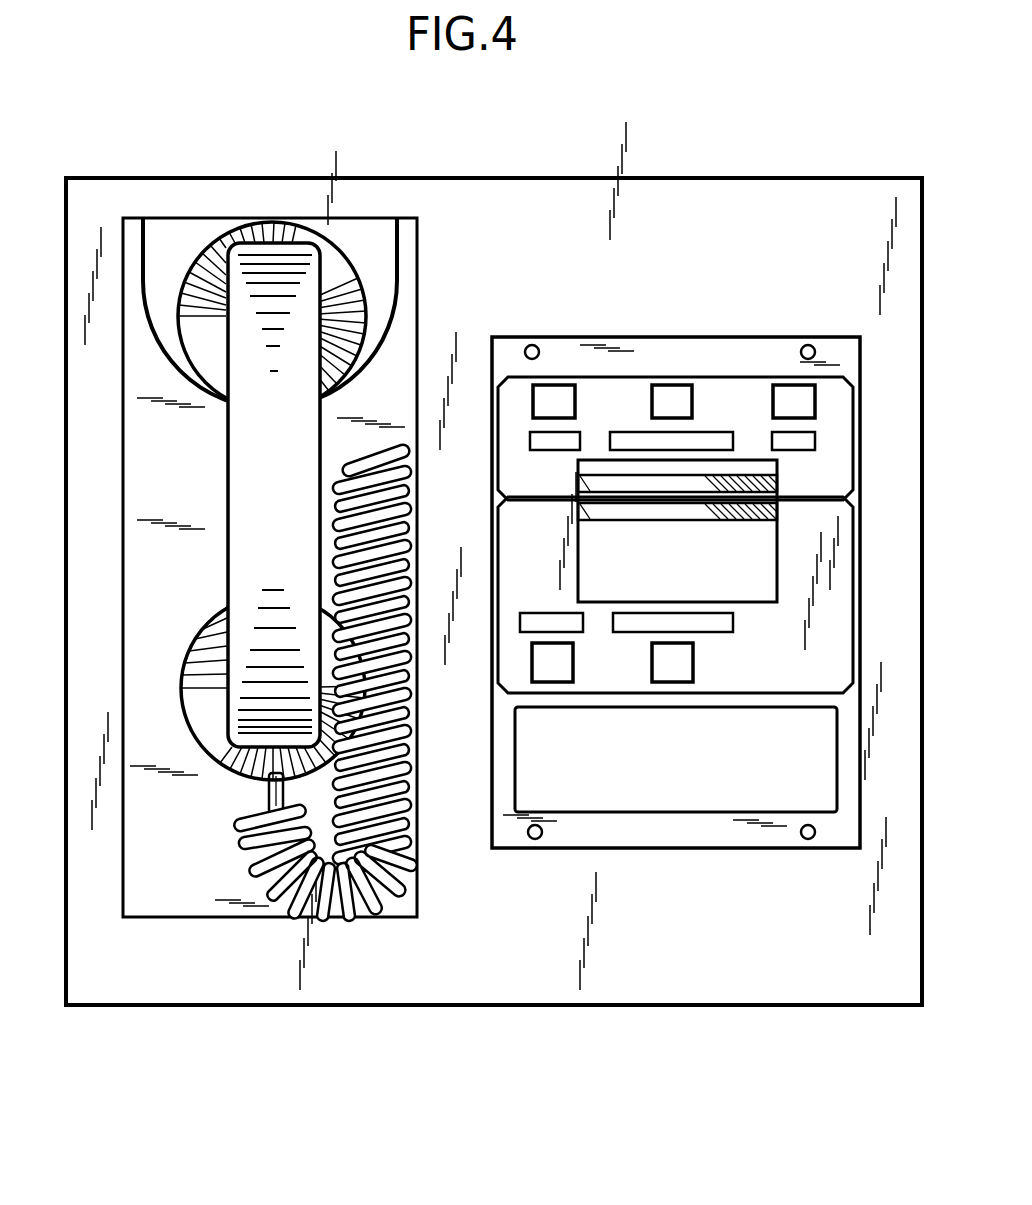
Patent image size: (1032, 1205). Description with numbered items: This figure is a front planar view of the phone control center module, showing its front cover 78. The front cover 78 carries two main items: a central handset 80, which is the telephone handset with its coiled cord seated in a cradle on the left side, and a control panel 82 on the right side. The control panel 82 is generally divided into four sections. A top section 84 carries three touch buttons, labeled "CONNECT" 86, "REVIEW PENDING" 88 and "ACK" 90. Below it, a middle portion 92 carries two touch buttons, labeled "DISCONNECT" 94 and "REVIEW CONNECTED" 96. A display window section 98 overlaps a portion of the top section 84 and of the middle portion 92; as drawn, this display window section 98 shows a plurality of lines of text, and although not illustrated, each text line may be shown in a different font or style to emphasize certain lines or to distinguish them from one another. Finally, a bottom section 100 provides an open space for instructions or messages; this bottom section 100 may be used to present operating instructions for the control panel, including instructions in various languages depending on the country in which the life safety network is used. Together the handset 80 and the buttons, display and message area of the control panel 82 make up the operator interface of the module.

The front cover 78 is at (694, 161).
The central handset 80 is at (254, 506).
The control panel 82 is at (757, 337).
The top section 84 is at (825, 463).
The touch button labeled "CONNECT" 86 is at (560, 402).
The touch button labeled "REVIEW PENDING" 88 is at (672, 392).
The touch button labeled "ACK" 90 is at (783, 401).
The middle portion 92 is at (836, 597).
The touch button labeled "DISCONNECT" 94 is at (558, 668).
The touch button labeled "REVIEW CONNECTED" 96 is at (680, 668).
The display window section 98 is at (764, 551).
The bottom section 100 is at (712, 773).